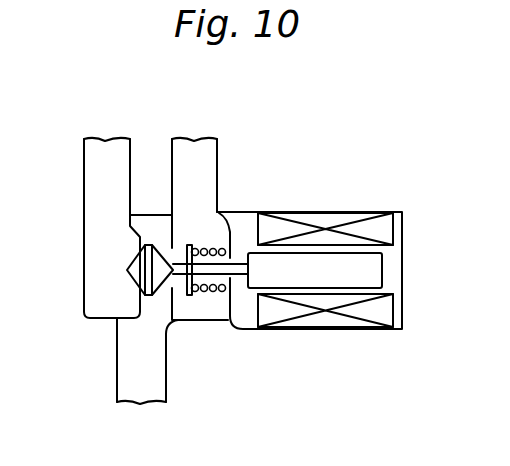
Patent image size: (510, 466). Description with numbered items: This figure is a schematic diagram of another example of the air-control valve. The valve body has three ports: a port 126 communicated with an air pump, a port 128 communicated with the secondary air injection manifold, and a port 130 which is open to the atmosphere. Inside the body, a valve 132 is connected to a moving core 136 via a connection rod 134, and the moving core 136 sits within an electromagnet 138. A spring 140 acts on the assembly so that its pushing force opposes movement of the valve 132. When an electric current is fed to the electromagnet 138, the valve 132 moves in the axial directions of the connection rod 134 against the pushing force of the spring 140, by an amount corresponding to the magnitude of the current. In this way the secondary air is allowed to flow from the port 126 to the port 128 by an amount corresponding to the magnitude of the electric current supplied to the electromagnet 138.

The port 126 is at (145, 400).
The port 128 is at (105, 146).
The port 130 is at (196, 146).
The valve 132 is at (127, 266).
The connection rod 134 is at (240, 262).
The moving core 136 is at (368, 268).
The electromagnet 138 is at (332, 218).
The spring 140 is at (217, 293).